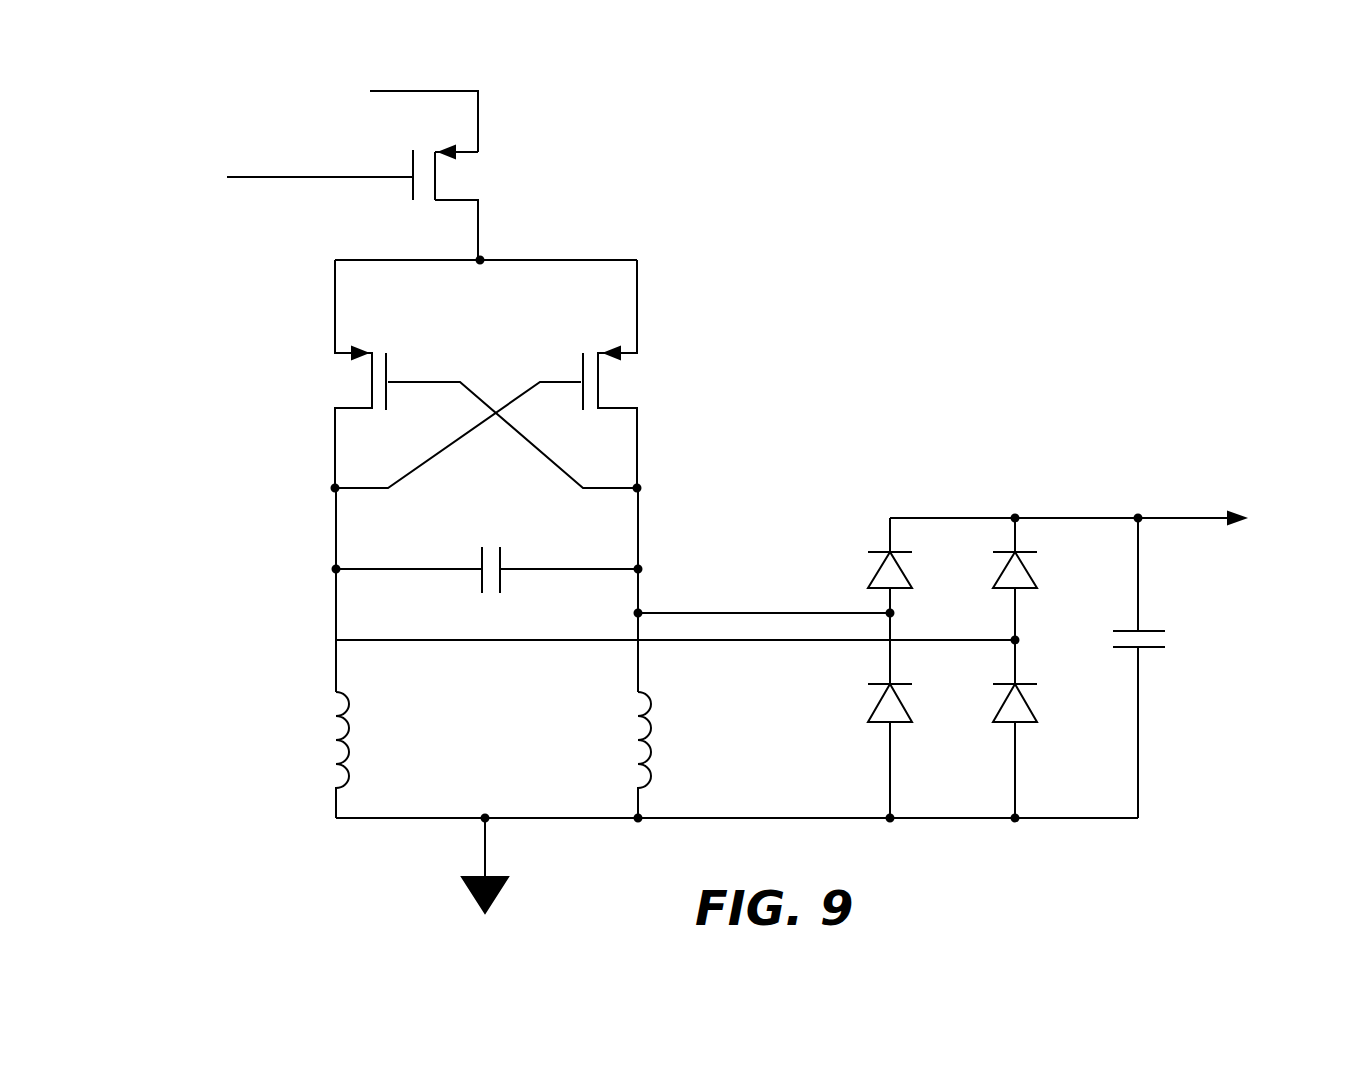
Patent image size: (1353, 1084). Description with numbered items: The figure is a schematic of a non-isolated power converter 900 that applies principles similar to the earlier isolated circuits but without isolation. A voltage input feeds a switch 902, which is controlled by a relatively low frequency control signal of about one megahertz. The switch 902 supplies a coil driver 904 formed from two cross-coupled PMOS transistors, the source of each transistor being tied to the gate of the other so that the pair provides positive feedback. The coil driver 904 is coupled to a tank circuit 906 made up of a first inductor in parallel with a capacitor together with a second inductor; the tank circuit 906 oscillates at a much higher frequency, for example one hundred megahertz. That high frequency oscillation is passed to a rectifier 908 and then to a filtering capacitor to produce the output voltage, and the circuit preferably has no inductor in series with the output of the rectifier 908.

The non-isolated power converter 900 is at (710, 482).
The switch 902 is at (485, 177).
The coil driver 904 is at (662, 407).
The tank circuit 906 is at (336, 740).
The rectifier 908 is at (1013, 497).